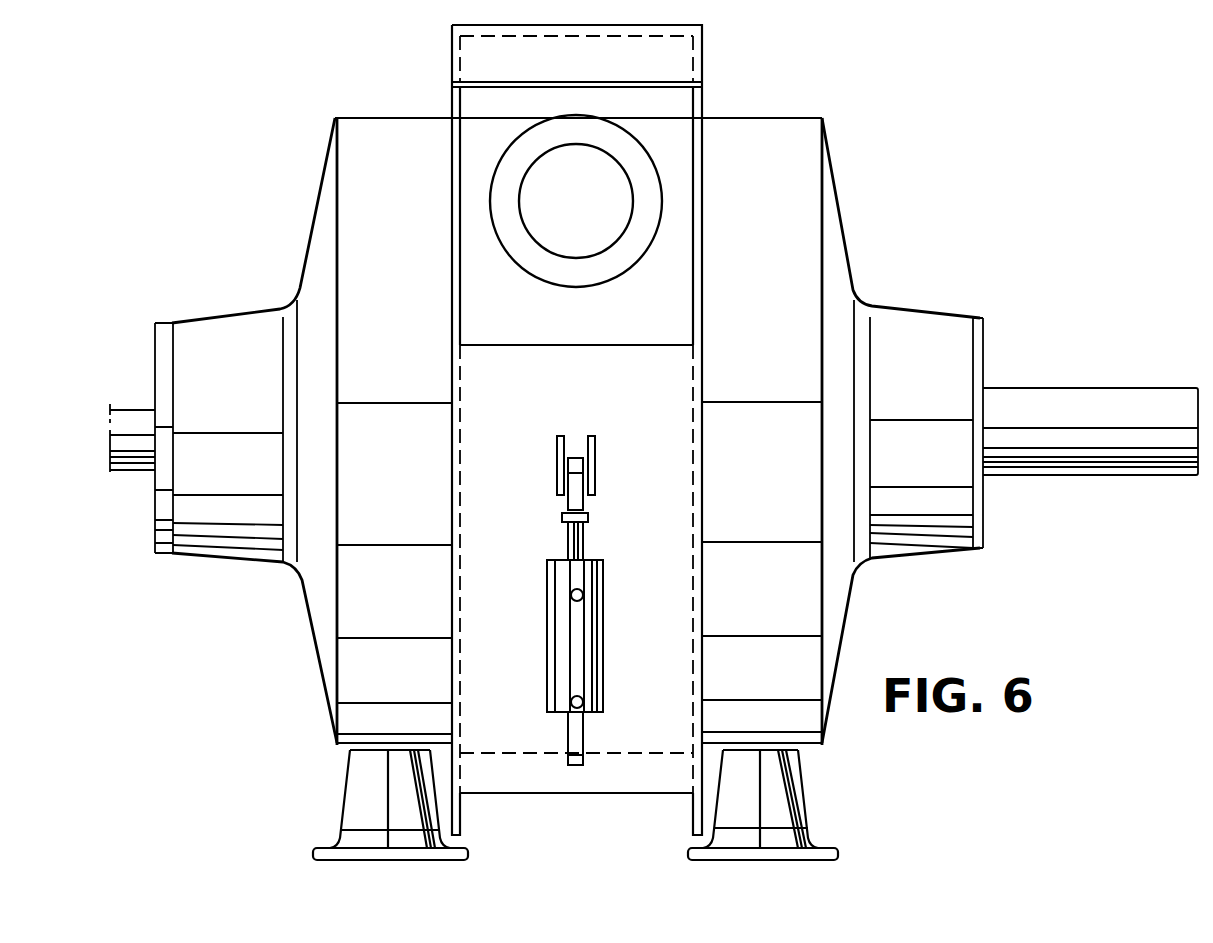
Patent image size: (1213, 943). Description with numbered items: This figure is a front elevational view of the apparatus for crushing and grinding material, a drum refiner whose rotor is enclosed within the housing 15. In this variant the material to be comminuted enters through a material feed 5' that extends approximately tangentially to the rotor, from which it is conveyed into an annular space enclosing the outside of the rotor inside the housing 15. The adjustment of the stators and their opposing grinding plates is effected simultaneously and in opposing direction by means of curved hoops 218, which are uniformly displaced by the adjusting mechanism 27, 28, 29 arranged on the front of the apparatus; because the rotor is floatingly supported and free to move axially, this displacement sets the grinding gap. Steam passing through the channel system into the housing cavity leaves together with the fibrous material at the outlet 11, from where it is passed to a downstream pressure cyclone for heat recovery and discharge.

The housing 15 is at (833, 212).
The curved hoops 218 is at (702, 48).
The material feed 5' is at (577, 201).
The adjusting mechanism 27 is at (595, 450).
The adjusting mechanism 28 is at (588, 531).
The adjusting mechanism 29 is at (600, 622).
The outlet 11 is at (355, 805).